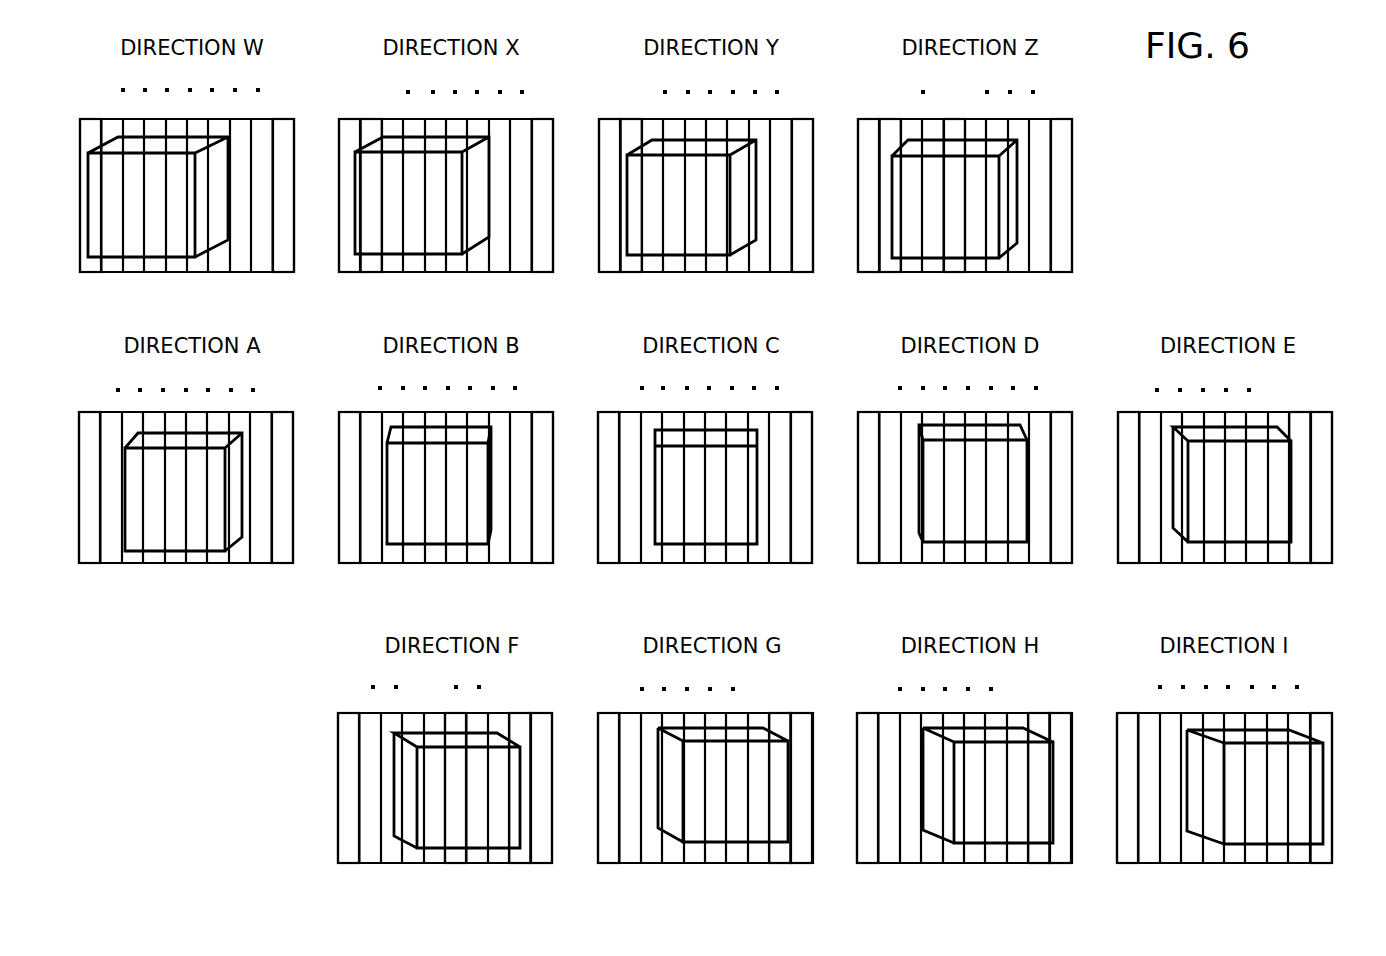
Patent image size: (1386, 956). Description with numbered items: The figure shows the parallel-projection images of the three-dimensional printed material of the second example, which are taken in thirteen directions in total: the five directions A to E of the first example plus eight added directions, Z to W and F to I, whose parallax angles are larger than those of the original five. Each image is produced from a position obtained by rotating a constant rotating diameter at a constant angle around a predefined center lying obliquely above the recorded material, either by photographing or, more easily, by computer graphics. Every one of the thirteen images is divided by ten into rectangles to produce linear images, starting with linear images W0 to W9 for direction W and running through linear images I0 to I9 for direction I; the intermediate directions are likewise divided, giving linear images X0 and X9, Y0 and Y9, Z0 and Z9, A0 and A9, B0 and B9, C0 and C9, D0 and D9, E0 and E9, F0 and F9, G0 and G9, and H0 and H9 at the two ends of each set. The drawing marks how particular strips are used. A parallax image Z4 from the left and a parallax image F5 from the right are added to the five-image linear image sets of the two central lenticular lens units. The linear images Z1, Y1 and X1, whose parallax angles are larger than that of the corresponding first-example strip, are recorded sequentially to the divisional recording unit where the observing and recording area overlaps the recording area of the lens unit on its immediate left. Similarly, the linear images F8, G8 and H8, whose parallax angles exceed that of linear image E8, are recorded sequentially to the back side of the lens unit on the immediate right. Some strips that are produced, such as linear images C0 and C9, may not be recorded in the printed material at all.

The linear image W0 is at (92, 130).
The linear image W9 is at (283, 130).
The linear image X0 is at (351, 132).
The linear image X1 is at (373, 132).
The linear image X9 is at (543, 132).
The linear image Y0 is at (607, 132).
The linear image Y1 is at (633, 132).
The linear image Y9 is at (802, 132).
The linear image Z0 is at (868, 134).
The linear image Z1 is at (892, 134).
The parallax image Z4 is at (937, 130).
The linear image Z9 is at (1061, 134).
The linear image A0 is at (88, 430).
The linear image A9 is at (279, 430).
The linear image B0 is at (350, 430).
The linear image B9 is at (540, 430).
The linear image C0 is at (611, 430).
The linear image C9 is at (803, 430).
The linear image D0 is at (871, 430).
The linear image D9 is at (1062, 430).
The linear image E0 is at (1128, 430).
The linear image E8 is at (1298, 426).
The linear image E9 is at (1321, 430).
The linear image F0 is at (346, 730).
The parallax image F5 is at (437, 727).
The linear image F8 is at (517, 728).
The linear image F9 is at (537, 730).
The linear image G0 is at (612, 732).
The linear image G8 is at (777, 724).
The linear image G9 is at (802, 728).
The linear image H0 is at (871, 732).
The linear image H8 is at (1037, 728).
The linear image H9 is at (1062, 730).
The linear image I0 is at (1131, 730).
The linear image I9 is at (1322, 730).